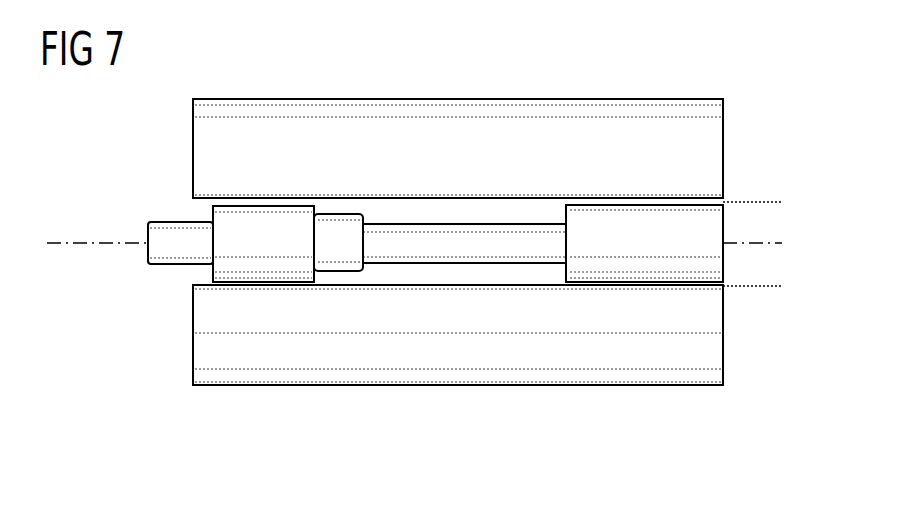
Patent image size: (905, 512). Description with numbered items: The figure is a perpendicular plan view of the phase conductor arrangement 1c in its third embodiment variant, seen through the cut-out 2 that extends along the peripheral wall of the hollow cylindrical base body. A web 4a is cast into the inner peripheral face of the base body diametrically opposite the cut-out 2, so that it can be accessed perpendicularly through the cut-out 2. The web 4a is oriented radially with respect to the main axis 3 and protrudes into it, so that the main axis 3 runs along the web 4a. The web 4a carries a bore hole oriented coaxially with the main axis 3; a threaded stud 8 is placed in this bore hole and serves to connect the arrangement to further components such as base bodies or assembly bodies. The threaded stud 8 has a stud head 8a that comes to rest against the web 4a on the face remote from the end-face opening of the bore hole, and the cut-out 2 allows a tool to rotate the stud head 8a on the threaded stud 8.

The phase conductor arrangement 1c is at (265, 385).
The cut-out 2 is at (785, 200).
The main axis 3 is at (61, 243).
The web 4a is at (213, 212).
The threaded stud 8 is at (170, 264).
The stud head 8a is at (340, 214).